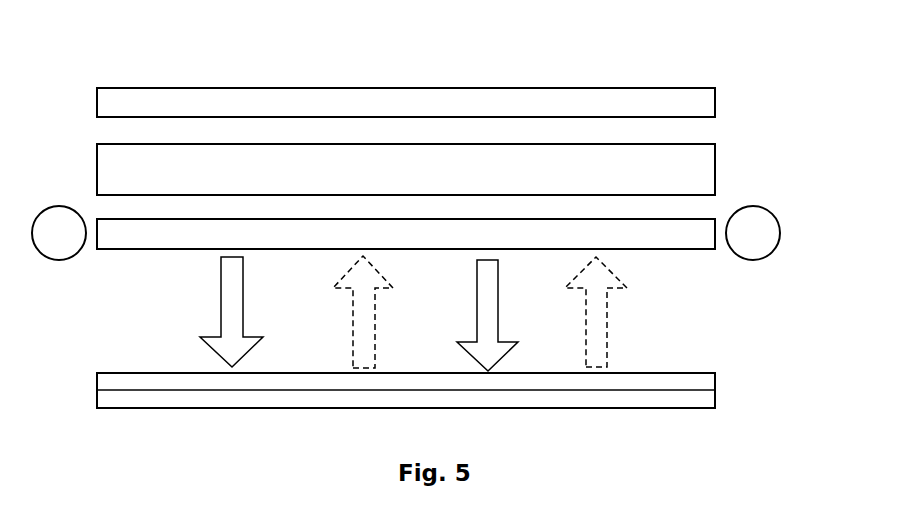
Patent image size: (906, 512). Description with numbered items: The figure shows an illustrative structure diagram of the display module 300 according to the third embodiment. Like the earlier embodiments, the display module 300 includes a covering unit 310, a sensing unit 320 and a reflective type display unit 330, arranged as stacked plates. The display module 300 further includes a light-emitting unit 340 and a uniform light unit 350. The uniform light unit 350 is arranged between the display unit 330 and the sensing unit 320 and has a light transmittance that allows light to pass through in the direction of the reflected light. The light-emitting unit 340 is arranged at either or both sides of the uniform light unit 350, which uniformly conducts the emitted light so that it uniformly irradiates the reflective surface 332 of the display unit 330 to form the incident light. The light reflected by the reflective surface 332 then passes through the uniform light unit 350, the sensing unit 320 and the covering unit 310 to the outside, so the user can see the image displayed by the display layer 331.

The display module 300 is at (406, 204).
The covering unit 310 is at (716, 100).
The sensing unit 320 is at (716, 165).
The reflective type display unit 330 is at (434, 365).
The display layer 331 is at (663, 383).
The reflective surface 332 is at (173, 390).
The light-emitting unit 340 is at (53, 207).
The uniform light unit 350 is at (707, 250).